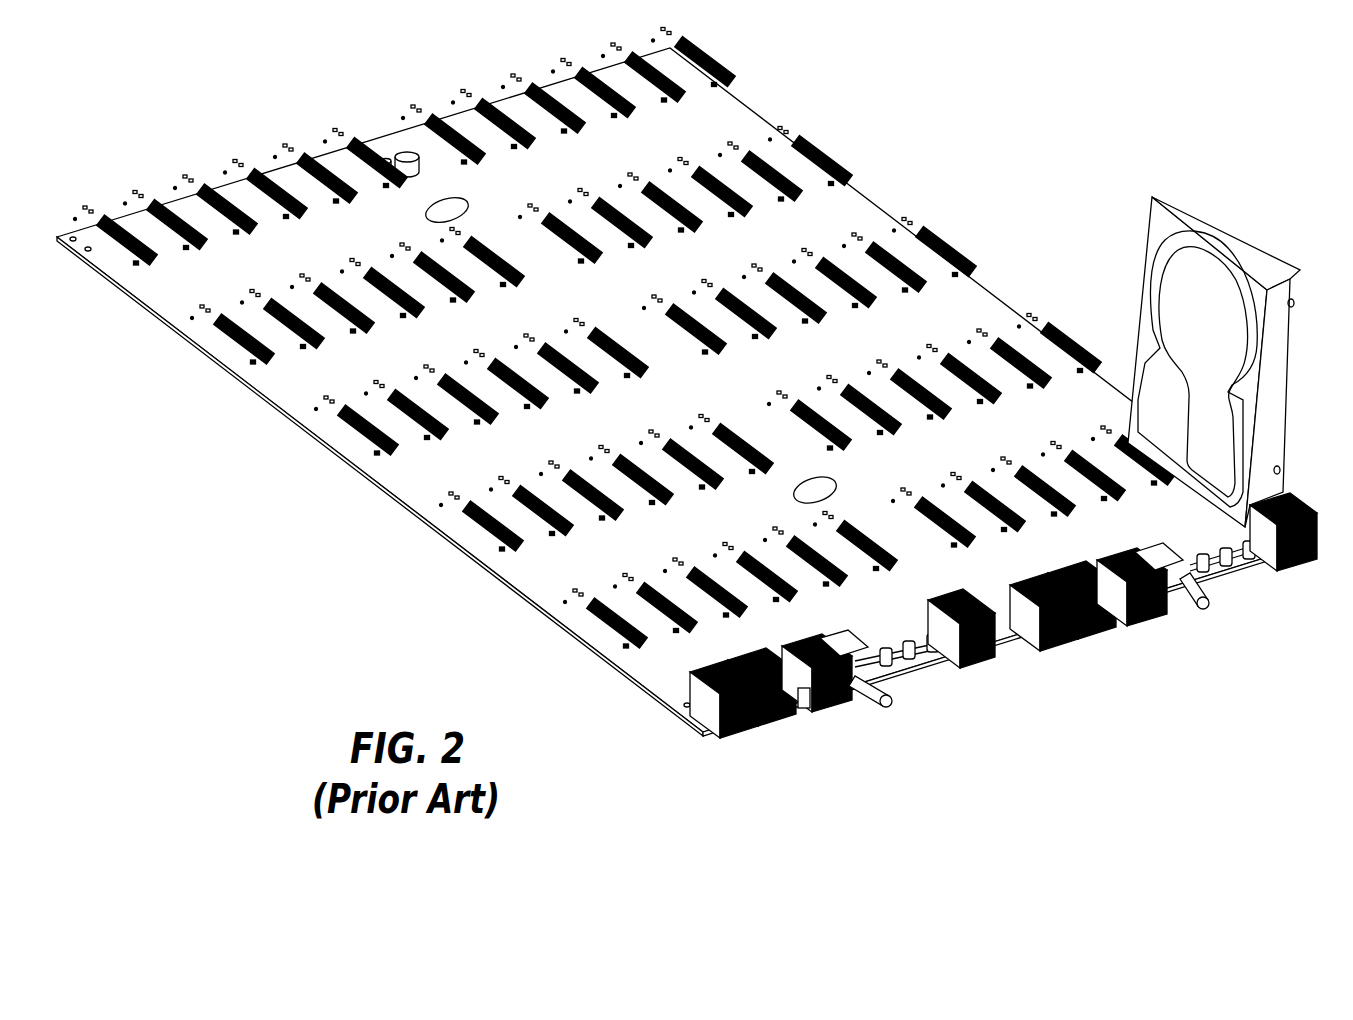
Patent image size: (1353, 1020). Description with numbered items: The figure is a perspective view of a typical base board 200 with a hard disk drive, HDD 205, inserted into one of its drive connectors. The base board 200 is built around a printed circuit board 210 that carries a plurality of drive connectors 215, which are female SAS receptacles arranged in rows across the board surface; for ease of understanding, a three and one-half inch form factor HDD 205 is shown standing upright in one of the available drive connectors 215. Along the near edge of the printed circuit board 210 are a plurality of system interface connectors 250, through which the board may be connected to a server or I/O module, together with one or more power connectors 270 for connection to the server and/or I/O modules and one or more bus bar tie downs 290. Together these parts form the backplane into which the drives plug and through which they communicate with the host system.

The base board 200 is at (686, 382).
The HDD 205 is at (1198, 197).
The printed circuit board 210 is at (297, 407).
The drive connector 215 is at (370, 438).
The system interface connector 250 is at (790, 717).
The power connector 270 is at (810, 710).
The bus bar tie down 290 is at (905, 667).